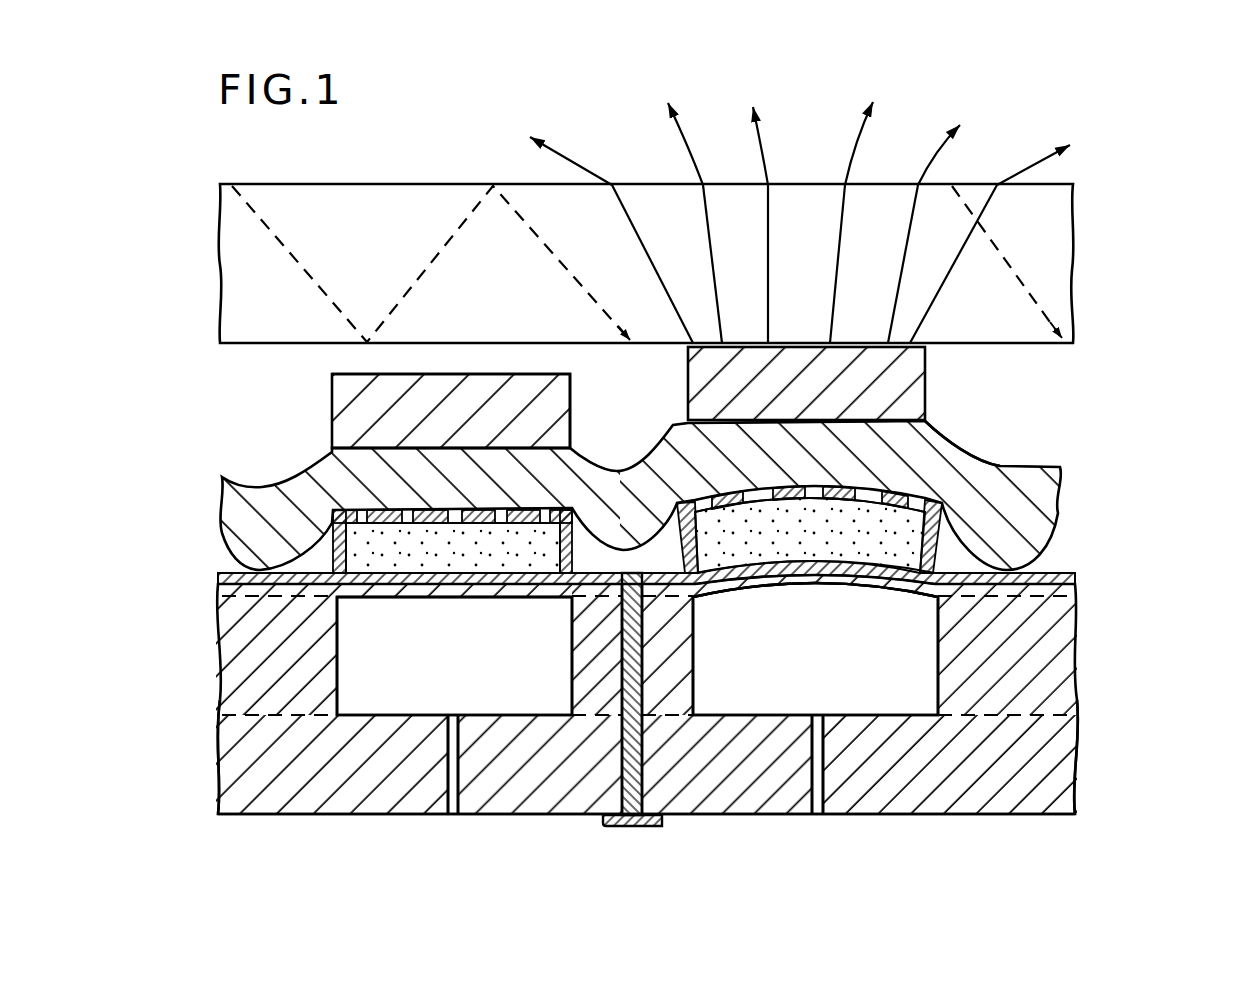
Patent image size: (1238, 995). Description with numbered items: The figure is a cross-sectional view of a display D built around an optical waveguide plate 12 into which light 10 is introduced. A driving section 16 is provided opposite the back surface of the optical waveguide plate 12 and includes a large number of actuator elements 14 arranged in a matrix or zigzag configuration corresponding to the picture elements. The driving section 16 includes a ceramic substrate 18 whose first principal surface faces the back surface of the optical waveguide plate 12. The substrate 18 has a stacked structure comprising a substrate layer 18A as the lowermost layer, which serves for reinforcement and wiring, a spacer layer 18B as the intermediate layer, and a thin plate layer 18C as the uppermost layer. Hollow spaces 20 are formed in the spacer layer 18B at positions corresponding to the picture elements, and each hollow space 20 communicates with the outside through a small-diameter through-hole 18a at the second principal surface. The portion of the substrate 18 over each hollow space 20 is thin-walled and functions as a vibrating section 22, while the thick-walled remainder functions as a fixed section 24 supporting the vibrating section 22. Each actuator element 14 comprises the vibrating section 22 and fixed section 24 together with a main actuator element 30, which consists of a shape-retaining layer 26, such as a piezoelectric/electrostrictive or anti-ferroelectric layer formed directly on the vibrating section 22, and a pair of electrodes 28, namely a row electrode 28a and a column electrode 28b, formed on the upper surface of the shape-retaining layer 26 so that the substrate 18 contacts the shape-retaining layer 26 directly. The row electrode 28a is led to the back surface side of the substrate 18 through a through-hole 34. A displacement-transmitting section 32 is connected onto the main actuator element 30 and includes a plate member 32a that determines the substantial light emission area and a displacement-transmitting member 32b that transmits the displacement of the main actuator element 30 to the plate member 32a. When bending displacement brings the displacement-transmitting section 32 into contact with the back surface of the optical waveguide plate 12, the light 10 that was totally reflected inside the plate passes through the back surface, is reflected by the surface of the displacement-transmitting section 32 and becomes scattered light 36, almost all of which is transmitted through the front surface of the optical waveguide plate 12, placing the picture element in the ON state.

The light 10 is at (280, 243).
The optical waveguide plate 12 is at (333, 184).
The actuator element 14 is at (305, 815).
The driving section 16 is at (607, 834).
The substrate 18 is at (1168, 565).
The substrate layer 18A is at (1068, 743).
The spacer layer 18B is at (1073, 654).
The thin plate layer 18C is at (1080, 581).
The through-hole 18a is at (451, 812).
The hollow space 20 is at (337, 668).
The vibrating section 22 is at (438, 588).
The fixed section 24 is at (252, 785).
The shape-retaining layer 26 is at (545, 547).
The pair of electrodes 28 is at (560, 483).
The row electrode 28a is at (862, 461).
The column electrode 28b is at (940, 505).
The main actuator element 30 is at (326, 521).
The displacement-transmitting section 32 is at (233, 373).
The plate member 32a is at (332, 413).
The displacement-transmitting member 32b is at (305, 485).
The through-hole 34 is at (636, 752).
The scattered light 36 is at (702, 207).
The display D is at (977, 150).